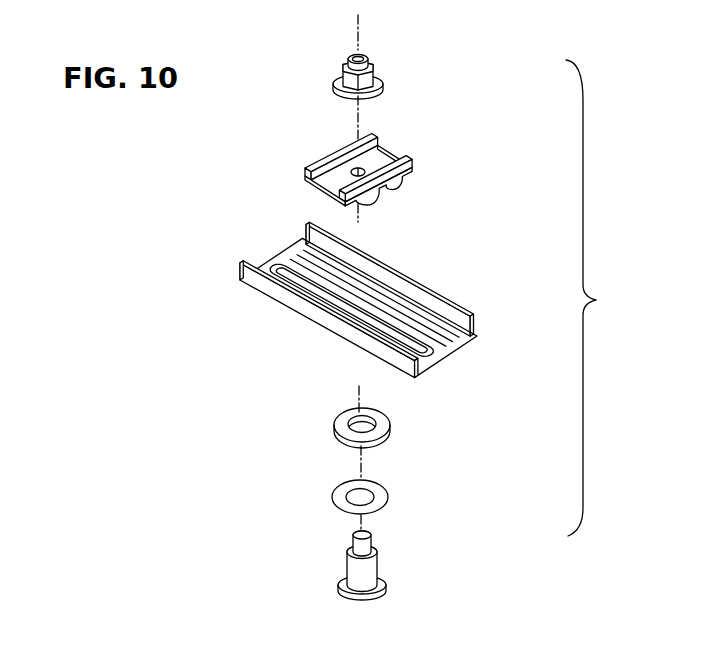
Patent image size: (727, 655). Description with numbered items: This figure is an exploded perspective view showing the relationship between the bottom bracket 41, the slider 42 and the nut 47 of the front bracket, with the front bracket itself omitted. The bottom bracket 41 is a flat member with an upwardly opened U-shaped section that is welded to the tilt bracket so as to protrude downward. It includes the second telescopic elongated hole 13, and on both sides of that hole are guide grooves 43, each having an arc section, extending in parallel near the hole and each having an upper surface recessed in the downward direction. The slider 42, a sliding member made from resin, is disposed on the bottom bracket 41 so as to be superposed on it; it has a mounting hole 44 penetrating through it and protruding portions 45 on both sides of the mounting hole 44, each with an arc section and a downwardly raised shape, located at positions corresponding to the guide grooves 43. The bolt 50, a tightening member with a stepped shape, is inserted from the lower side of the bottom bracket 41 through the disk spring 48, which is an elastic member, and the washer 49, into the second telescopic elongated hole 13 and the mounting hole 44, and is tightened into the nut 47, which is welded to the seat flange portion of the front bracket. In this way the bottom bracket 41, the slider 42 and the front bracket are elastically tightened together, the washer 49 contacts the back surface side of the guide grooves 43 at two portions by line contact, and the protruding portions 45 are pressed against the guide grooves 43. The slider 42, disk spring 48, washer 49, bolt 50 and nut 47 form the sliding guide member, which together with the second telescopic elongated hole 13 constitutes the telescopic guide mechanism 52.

The second telescopic elongated hole 13 is at (463, 322).
The bottom bracket 41 is at (408, 322).
The slider 42 is at (417, 191).
The guide grooves 43 is at (414, 316).
The mounting hole 44 is at (347, 170).
The protruding portions 45 is at (390, 189).
The nut 47 is at (383, 79).
The disk spring 48 is at (387, 494).
The washer 49 is at (336, 427).
The bolt 50 is at (387, 558).
The telescopic guide mechanism 52 is at (594, 298).